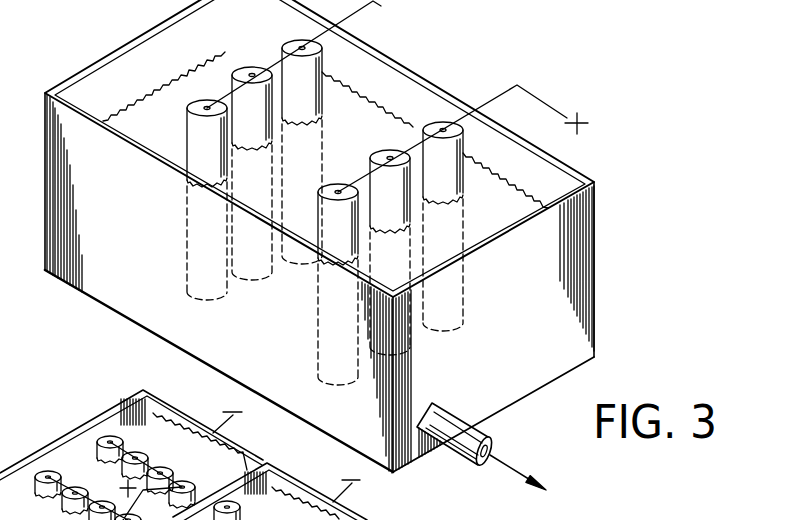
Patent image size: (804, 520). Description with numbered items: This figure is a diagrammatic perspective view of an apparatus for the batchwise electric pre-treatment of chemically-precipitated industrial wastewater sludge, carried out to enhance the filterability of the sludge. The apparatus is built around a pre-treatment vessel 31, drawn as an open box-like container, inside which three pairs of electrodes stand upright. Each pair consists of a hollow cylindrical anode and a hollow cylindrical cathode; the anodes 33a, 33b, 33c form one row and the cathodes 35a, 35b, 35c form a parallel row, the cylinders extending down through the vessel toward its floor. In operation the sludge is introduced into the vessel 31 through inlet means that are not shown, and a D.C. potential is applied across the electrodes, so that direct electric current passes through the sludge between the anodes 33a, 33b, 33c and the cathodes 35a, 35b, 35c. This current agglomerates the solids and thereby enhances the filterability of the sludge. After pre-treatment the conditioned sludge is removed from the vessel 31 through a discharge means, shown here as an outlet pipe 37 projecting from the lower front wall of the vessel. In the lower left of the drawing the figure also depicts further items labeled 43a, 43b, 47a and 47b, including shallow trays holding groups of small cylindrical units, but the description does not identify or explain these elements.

The pre-treatment vessel 31 is at (596, 182).
The anode 33a is at (338, 190).
The anode 33b is at (386, 156).
The anode 33c is at (438, 128).
The cathode 35a is at (206, 106).
The cathode 35b is at (250, 75).
The cathode 35c is at (296, 48).
The outlet pipe 37 is at (489, 433).
The cell assembly 43a is at (58, 470).
The cell assembly 43b is at (356, 500).
The tray 47a is at (194, 421).
The tray 47b is at (313, 492).